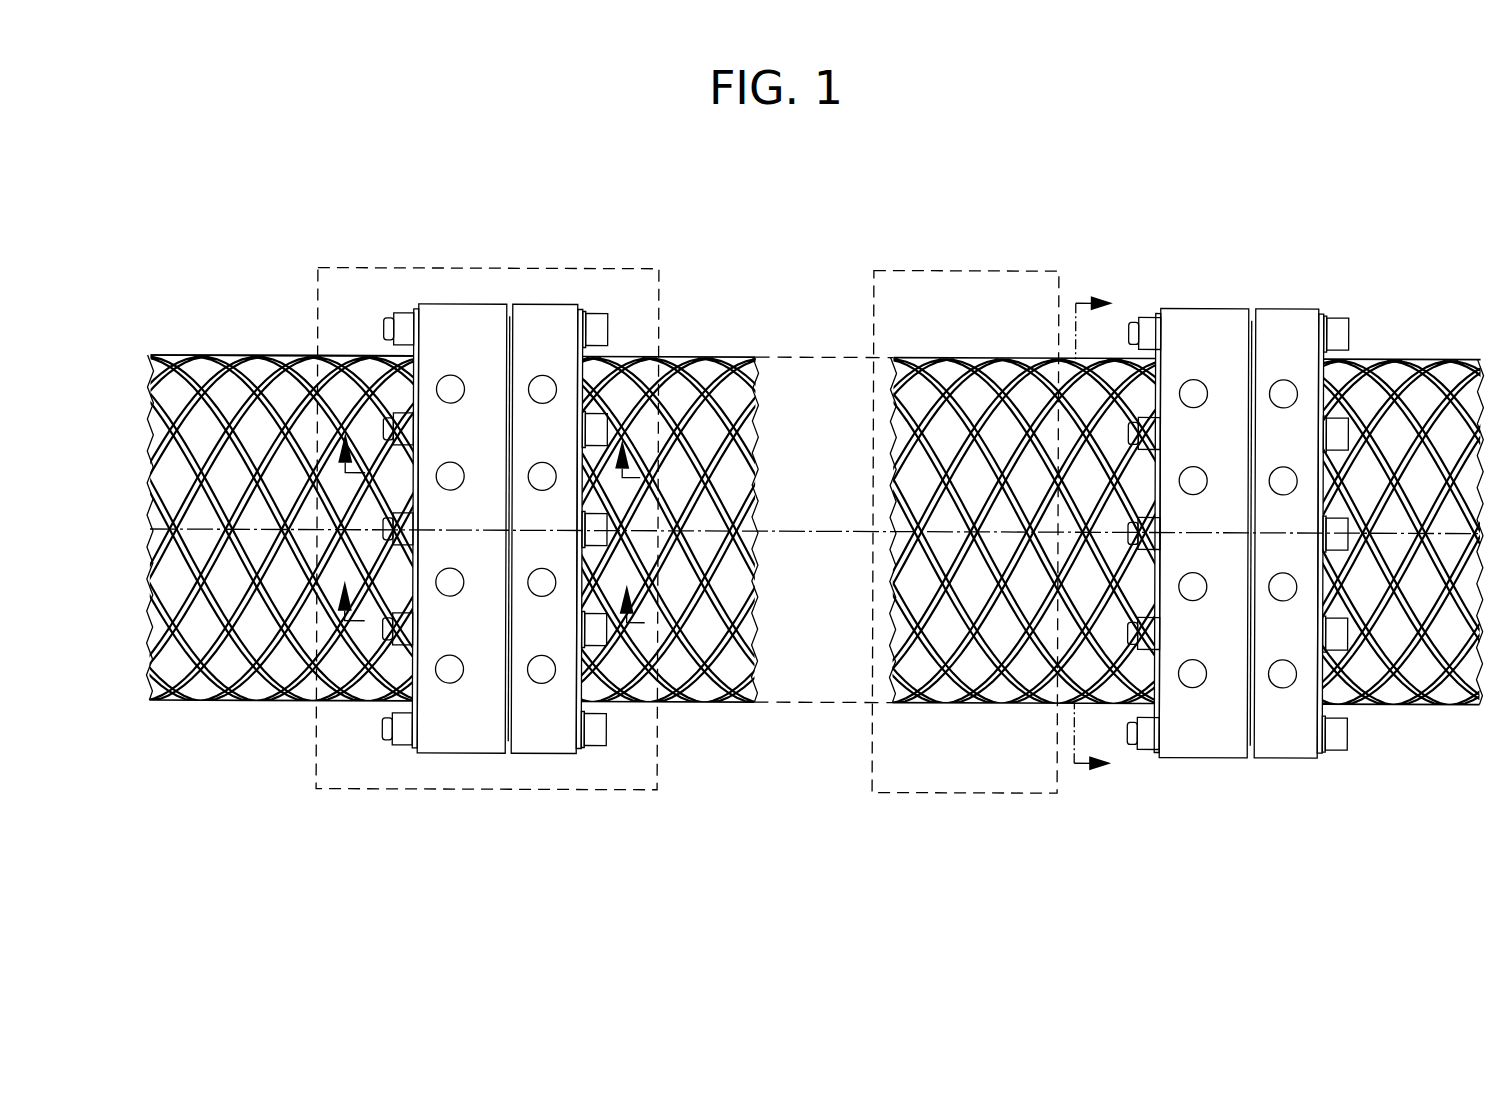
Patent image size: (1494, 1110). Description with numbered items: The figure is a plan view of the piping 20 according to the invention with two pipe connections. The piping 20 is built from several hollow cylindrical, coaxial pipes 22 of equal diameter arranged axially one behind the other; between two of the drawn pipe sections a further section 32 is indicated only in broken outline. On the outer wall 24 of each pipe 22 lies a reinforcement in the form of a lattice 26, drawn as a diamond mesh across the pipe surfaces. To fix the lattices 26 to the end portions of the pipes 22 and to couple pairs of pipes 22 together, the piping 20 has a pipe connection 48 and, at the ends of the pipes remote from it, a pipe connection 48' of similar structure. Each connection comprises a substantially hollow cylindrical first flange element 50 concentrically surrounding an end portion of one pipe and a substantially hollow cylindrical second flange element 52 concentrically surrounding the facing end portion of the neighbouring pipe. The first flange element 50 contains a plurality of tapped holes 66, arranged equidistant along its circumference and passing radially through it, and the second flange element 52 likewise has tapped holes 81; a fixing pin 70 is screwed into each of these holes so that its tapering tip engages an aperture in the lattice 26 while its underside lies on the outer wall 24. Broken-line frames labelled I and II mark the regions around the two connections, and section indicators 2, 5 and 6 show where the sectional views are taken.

The piping 20 is at (172, 340).
The pipe 22 is at (255, 372).
The outer wall 24 is at (205, 700).
The lattice 26 is at (240, 700).
The intermediate pipe section 32 is at (798, 526).
The pipe connection 48 is at (478, 458).
The pipe connection 48' is at (1223, 460).
The first flange element 50 is at (476, 733).
The second flange element 52 is at (541, 733).
The tapped holes 66 is at (450, 672).
The fixing pin 70 is at (542, 385).
The tapped holes 81 is at (545, 672).
The first region I is at (1005, 268).
The second region II is at (602, 267).
The section line 2- 2 is at (1090, 535).
The section line 5- 5 is at (485, 470).
The section line 6- 6 is at (487, 620).